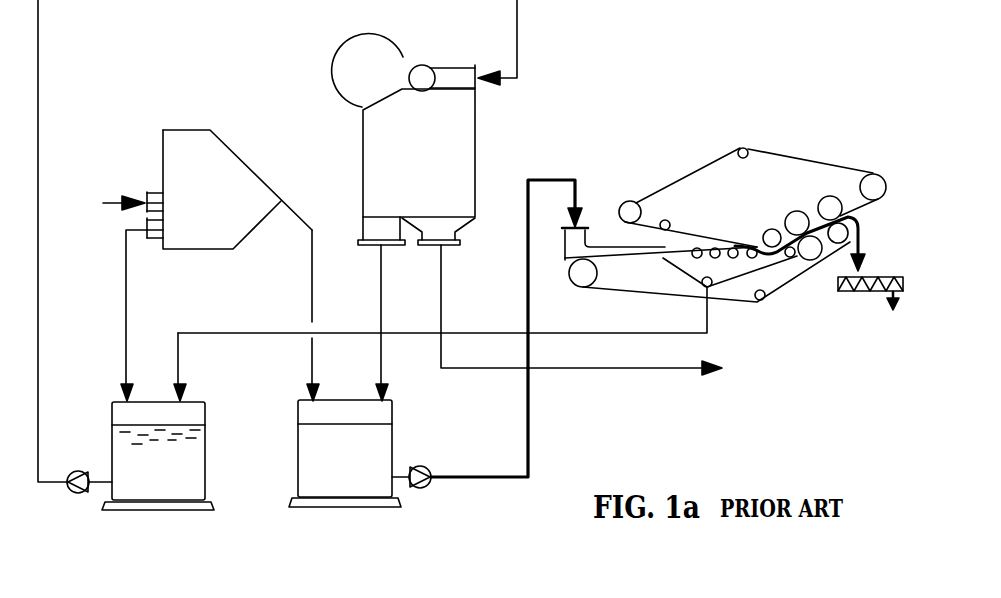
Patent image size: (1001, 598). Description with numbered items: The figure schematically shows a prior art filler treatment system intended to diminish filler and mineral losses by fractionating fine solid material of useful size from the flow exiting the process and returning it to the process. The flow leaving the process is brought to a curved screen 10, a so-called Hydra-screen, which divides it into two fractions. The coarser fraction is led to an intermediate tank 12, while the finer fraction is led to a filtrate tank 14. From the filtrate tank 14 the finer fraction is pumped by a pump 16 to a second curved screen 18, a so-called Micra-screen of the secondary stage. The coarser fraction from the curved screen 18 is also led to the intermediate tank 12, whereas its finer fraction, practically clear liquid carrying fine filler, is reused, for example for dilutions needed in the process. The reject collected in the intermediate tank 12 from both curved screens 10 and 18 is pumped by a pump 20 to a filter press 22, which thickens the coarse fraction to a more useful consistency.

The curved screen 10 is at (190, 170).
The intermediate tank 12 is at (333, 449).
The filtrate tank 14 is at (175, 413).
The pump 16 is at (68, 491).
The curved screen 18 is at (438, 162).
The pump 20 is at (420, 465).
The filter press 22 is at (774, 190).